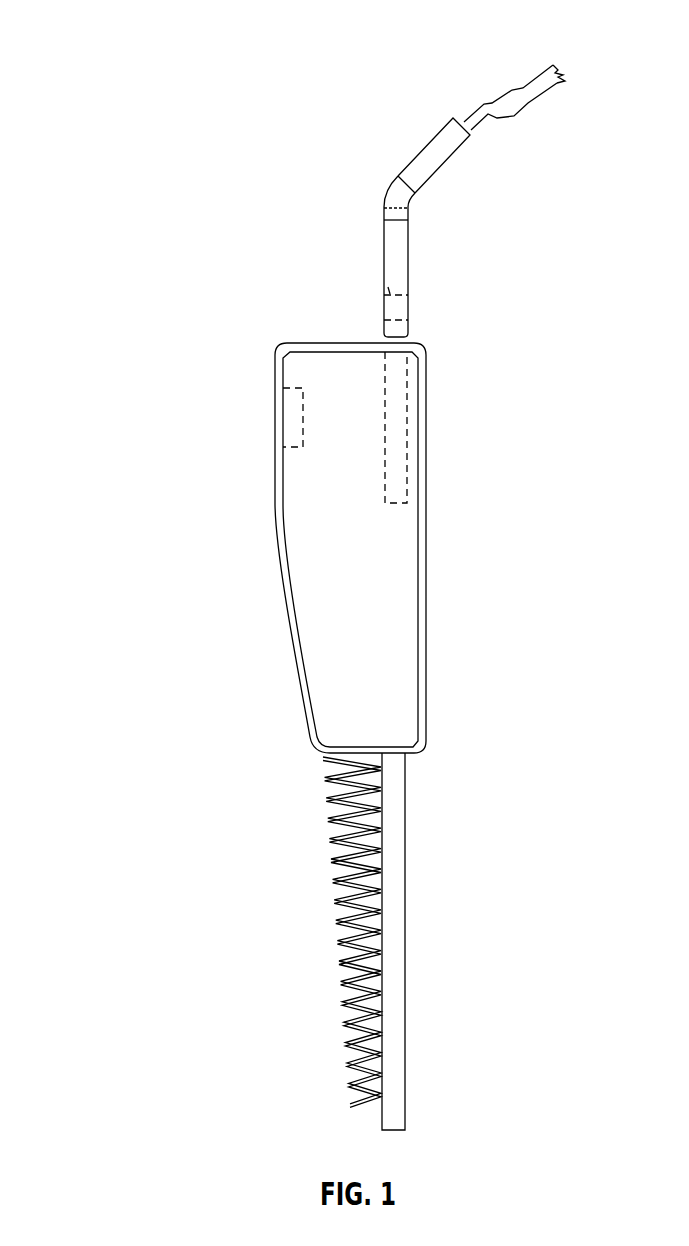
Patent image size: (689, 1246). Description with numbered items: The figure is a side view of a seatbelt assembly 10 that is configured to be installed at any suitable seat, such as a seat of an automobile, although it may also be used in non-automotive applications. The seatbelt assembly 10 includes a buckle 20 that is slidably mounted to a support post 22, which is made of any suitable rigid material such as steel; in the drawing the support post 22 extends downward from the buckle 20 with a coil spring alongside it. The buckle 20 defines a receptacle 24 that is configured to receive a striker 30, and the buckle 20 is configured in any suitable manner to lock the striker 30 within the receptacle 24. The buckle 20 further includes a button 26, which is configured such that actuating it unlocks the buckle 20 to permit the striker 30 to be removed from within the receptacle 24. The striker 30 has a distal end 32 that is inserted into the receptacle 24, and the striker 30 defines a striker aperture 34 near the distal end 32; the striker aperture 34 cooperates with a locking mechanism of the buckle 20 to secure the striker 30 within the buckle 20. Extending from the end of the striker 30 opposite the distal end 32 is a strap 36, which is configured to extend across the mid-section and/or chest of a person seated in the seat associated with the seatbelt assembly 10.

The seatbelt assembly 10 is at (116, 50).
The buckle 20 is at (279, 490).
The support post 22 is at (405, 962).
The receptacle 24 is at (406, 448).
The button 26 is at (288, 383).
The striker 30 is at (384, 233).
The distal end 32 is at (397, 343).
The striker aperture 34 is at (385, 284).
The strap 36 is at (503, 93).